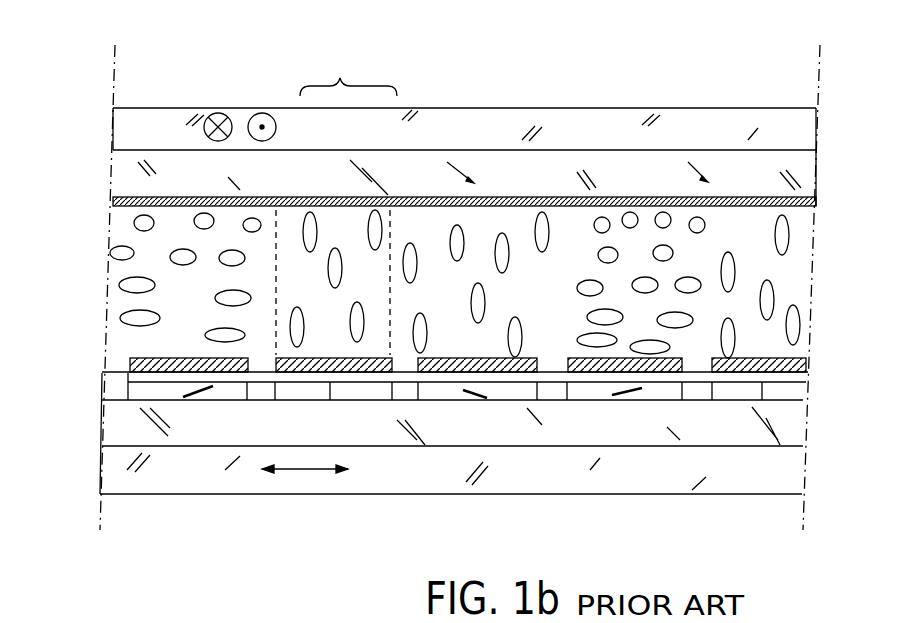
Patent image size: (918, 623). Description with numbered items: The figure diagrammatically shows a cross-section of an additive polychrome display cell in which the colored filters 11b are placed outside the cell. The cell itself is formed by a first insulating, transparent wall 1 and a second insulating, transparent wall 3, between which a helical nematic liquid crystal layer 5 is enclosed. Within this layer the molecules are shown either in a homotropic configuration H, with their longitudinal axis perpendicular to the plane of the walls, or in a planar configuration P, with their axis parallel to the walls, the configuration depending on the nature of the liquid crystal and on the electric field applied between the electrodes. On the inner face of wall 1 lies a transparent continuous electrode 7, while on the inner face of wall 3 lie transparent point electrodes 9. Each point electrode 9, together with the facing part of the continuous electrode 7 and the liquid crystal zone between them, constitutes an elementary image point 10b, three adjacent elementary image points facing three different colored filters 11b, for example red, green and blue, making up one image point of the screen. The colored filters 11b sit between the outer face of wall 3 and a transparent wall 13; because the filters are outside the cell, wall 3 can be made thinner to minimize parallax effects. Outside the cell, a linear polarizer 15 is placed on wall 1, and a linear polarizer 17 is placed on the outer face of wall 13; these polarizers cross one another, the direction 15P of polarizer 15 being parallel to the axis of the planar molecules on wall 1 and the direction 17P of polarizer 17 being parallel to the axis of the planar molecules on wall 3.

The linear polarizer 15 is at (135, 116).
The polarization direction of polarizer 15 15P is at (258, 112).
The first insulating, transparent wall 1 is at (130, 158).
The continuous electrode 7 is at (125, 201).
The elementary image point 10b is at (336, 203).
The homotropic configuration H is at (505, 245).
The planar configuration P is at (652, 282).
The helical nematic liquid crystal layer 5 is at (779, 238).
The second insulating, transparent wall 3 is at (105, 372).
The point electrode 9 is at (130, 358).
The colored filters 11b is at (157, 390).
The transparent wall 13 is at (128, 430).
The linear polarizer 17 is at (118, 487).
The polarization direction of polarizer 17 17P is at (310, 469).